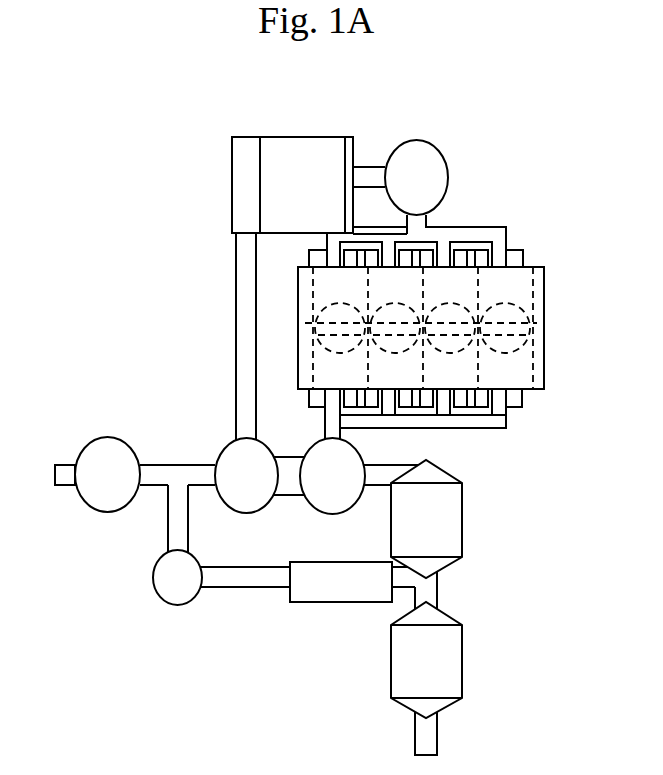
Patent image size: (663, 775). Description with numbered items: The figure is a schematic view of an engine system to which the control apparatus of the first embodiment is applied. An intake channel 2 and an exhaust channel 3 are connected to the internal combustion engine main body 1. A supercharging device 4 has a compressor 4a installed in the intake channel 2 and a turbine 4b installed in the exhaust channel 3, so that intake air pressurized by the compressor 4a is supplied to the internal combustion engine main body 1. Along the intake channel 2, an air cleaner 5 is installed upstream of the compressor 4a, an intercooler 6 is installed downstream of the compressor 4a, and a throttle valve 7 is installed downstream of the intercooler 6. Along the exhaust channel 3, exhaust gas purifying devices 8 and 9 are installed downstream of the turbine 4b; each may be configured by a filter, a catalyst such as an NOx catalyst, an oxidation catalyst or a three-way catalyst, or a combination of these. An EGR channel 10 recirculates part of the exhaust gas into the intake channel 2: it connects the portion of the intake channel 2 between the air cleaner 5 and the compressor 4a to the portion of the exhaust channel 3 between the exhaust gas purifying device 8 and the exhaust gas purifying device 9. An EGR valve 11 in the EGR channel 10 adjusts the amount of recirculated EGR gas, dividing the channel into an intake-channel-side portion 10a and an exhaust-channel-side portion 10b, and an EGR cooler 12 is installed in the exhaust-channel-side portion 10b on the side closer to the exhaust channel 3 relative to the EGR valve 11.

The internal combustion engine main body 1 is at (548, 328).
The intake channel 2 is at (67, 463).
The exhaust channel 3 is at (325, 425).
The supercharging device 4 is at (295, 505).
The compressor 4a is at (262, 492).
The turbine 4b is at (348, 493).
The air cleaner 5 is at (117, 491).
The intercooler 6 is at (300, 147).
The throttle valve 7 is at (426, 194).
The exhaust gas purifying device 8 is at (463, 515).
The exhaust gas purifying device 9 is at (463, 665).
The EGR channel 10 is at (168, 537).
The intake-channel-side portion 10a is at (183, 532).
The exhaust-channel-side portion 10b is at (258, 580).
The EGR valve 11 is at (178, 607).
The EGR cooler 12 is at (318, 603).